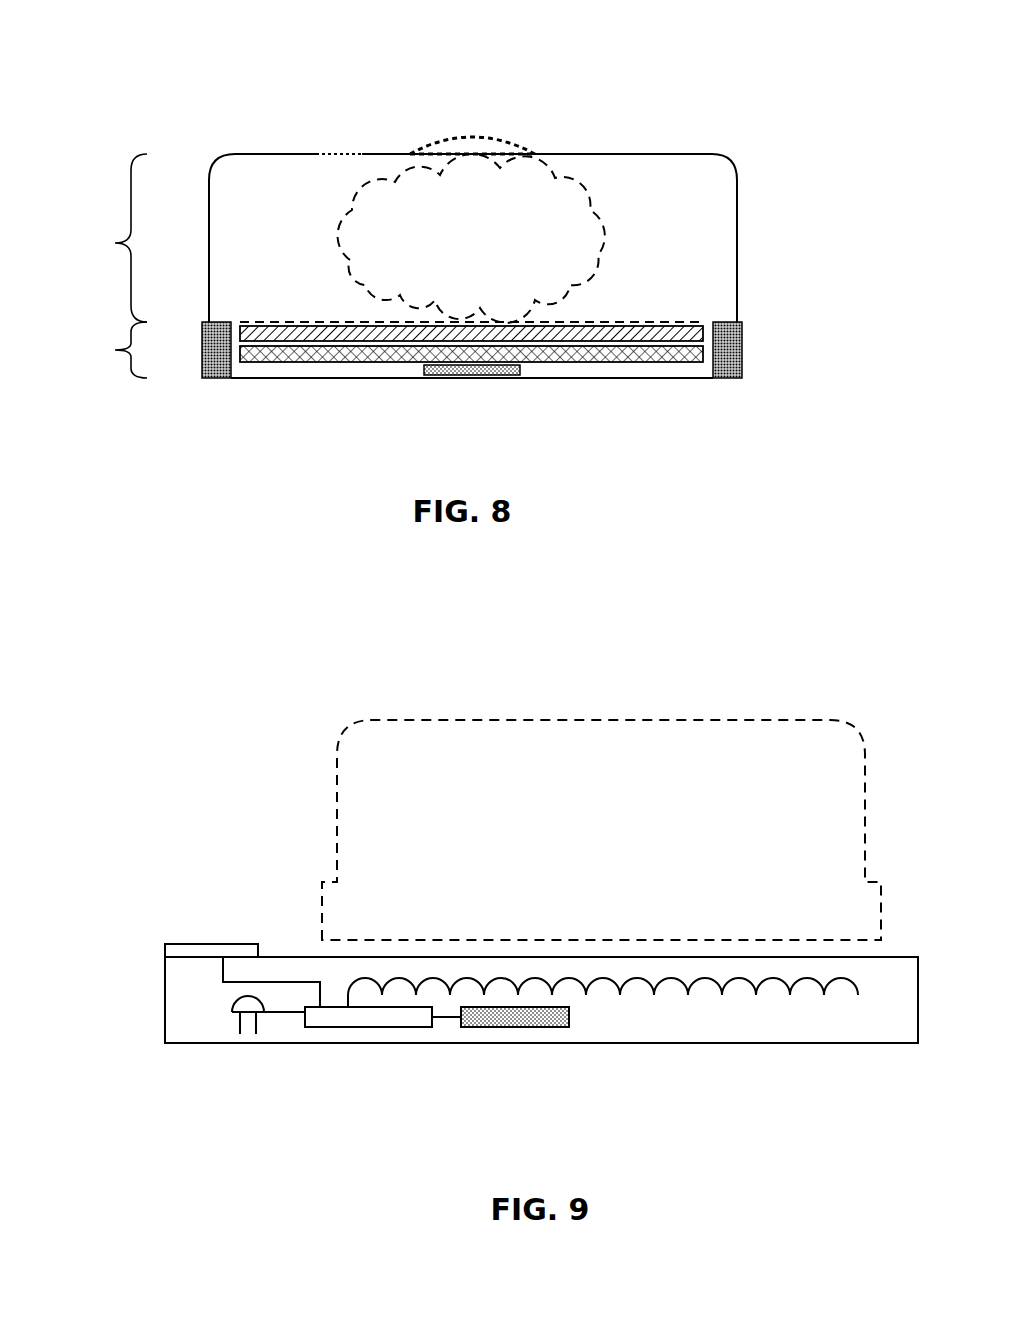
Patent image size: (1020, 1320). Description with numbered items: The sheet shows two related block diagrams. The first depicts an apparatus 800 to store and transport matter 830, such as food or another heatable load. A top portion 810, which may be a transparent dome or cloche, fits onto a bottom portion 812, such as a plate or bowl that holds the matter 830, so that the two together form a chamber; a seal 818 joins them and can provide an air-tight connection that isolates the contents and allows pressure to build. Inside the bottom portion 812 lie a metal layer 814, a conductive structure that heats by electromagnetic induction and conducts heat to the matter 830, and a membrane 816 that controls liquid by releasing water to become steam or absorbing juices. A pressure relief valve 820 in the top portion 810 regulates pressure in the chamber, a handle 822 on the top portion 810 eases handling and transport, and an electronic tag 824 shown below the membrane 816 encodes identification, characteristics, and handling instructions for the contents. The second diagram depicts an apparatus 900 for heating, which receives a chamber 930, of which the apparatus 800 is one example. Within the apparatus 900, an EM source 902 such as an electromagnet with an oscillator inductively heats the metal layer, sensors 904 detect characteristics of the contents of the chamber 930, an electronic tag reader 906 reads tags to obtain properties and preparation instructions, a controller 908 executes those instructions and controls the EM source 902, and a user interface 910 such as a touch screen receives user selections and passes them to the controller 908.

In FIG. 8, the apparatus to store and transport matter 800 is at (473, 361).
In FIG. 8, the top portion 810 is at (88, 238).
In FIG. 8, the bottom portion 812 is at (89, 350).
In FIG. 8, the metal layer 814 is at (703, 323).
In FIG. 8, the membrane 816 is at (677, 362).
In FIG. 8, the seal 818 is at (743, 350).
In FIG. 8, the pressure relief valve 820 is at (337, 147).
In FIG. 8, the handle 822 is at (535, 150).
In FIG. 8, the electronic tag 824 is at (472, 378).
In FIG. 8, the matter 830 is at (471, 238).
In FIG. 9, the apparatus for heating 900 is at (150, 993).
In FIG. 9, the EM source 902 is at (753, 1007).
In FIG. 9, the sensors 904 is at (228, 1005).
In FIG. 9, the electronic tag reader 906 is at (515, 1030).
In FIG. 9, the controller 908 is at (332, 1028).
In FIG. 9, the user interface 910 is at (203, 944).
In FIG. 9, the chamber 930 is at (601, 830).